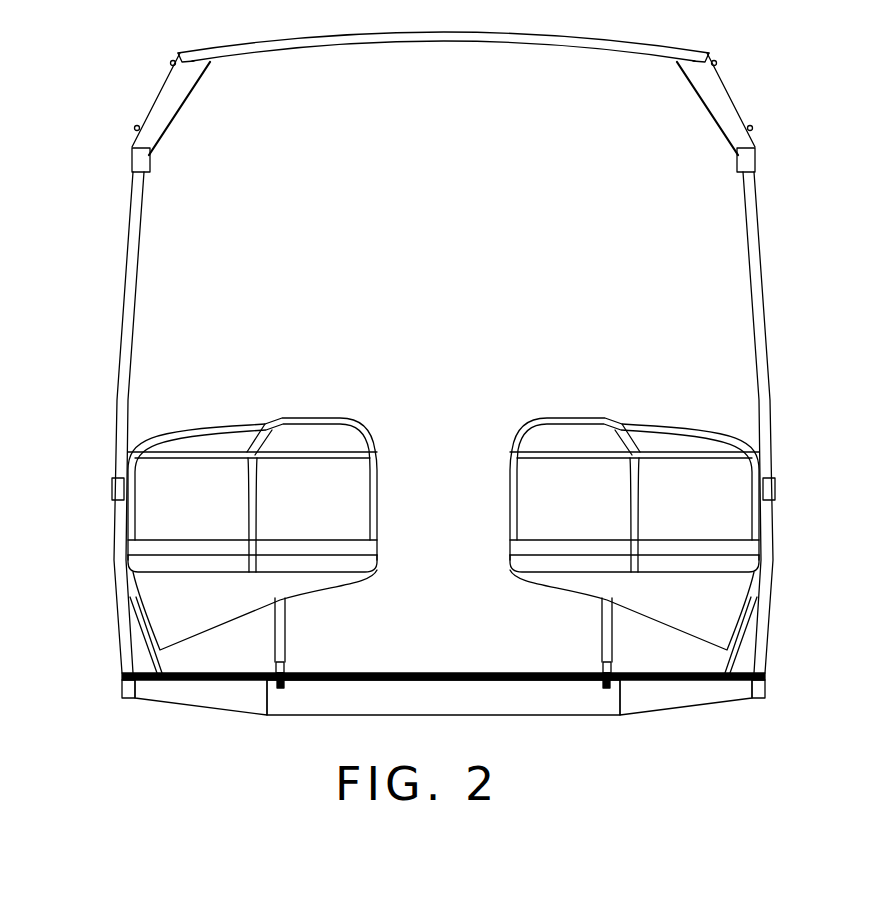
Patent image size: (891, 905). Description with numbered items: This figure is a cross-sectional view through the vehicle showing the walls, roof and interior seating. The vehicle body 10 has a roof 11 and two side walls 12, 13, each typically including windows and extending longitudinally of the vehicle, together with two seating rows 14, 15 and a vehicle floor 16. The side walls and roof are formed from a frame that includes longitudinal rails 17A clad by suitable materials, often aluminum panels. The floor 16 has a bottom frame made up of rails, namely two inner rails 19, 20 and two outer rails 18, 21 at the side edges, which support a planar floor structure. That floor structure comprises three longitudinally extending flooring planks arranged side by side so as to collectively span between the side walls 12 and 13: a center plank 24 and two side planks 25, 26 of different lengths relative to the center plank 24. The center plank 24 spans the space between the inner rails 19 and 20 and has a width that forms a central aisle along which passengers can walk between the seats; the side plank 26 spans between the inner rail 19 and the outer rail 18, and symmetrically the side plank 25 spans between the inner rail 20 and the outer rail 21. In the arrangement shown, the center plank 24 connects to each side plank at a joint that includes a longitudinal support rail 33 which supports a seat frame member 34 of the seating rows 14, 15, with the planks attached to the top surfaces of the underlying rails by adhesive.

The vehicle body 10 is at (782, 262).
The roof 11 is at (344, 200).
The side wall 12 is at (757, 280).
The side wall 13 is at (130, 280).
The seating row 14 is at (366, 402).
The seating row 15 is at (526, 404).
The vehicle floor 16 is at (403, 635).
The longitudinal rails 17A is at (775, 487).
The outer rail 18 is at (765, 685).
The inner rail 19 is at (620, 700).
The inner rail 20 is at (267, 700).
The outer rail 21 is at (122, 685).
The center plank 24 is at (452, 673).
The side plank 25 is at (207, 673).
The side plank 26 is at (676, 673).
The longitudinal support rail 33 is at (299, 653).
The seat frame member 34 is at (287, 625).